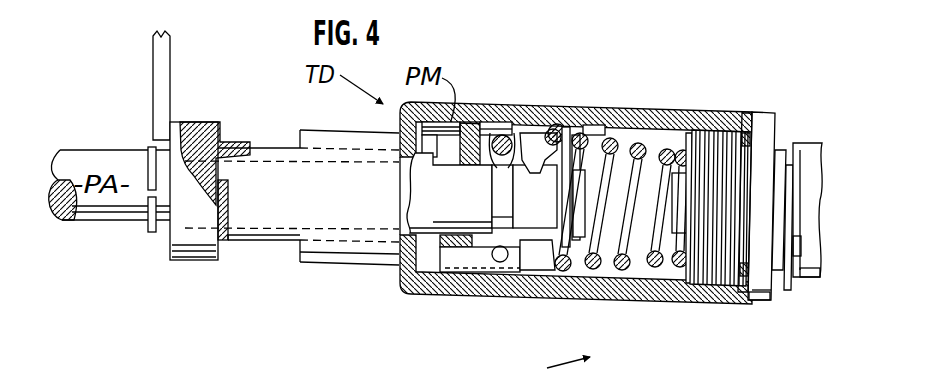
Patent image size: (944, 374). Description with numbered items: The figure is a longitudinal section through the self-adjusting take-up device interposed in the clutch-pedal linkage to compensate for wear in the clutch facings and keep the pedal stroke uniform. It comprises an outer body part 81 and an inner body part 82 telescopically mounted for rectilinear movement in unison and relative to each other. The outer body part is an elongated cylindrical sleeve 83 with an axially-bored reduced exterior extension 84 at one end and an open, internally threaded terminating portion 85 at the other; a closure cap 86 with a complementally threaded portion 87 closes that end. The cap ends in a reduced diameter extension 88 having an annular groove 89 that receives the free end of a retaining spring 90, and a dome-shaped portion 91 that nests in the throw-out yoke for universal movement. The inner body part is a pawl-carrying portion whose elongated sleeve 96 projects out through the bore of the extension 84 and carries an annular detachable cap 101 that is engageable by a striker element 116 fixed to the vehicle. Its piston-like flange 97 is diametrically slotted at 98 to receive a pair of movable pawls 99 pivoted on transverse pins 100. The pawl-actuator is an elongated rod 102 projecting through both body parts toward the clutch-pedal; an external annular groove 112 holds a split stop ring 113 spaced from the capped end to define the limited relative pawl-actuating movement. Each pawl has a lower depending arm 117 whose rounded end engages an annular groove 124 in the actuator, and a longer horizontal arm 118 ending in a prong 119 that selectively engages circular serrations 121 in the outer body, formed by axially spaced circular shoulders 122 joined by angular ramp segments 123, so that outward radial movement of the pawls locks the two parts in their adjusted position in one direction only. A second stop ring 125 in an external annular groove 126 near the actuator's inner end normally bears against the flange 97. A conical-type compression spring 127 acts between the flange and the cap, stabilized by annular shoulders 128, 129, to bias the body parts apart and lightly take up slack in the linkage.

The outer body part 81 is at (701, 108).
The inner body part 82 is at (267, 244).
The elongated cylindrical sleeve 83 is at (747, 137).
The reduced exterior extension 84 is at (345, 264).
The internally threaded terminating portion 85 is at (758, 140).
The closure cap 86 is at (768, 143).
The complementally threaded portion 87 is at (749, 299).
The reduced diameter extension 88 is at (781, 268).
The annular groove 89 is at (789, 178).
The retaining spring 90 is at (789, 245).
The dome-shaped portion 91 is at (817, 278).
The elongated sleeve 96 is at (276, 148).
The piston-like flange 97 is at (432, 148).
The slot 98 is at (560, 126).
The movable pawl 99 is at (448, 225).
The transverse pin 100 is at (442, 297).
The annular detachable cap 101 is at (192, 260).
The elongated rod 102 is at (112, 218).
The external annular groove 112 is at (148, 191).
The split stop ring 113 is at (152, 233).
The striker element 116 is at (168, 67).
The lower depending arm 117 is at (496, 220).
The horizontal arm 118 is at (535, 196).
The prong 119 is at (500, 256).
The circular serrations 121 is at (600, 128).
The circular shoulders 122 is at (607, 127).
The angular ramp segments 123 is at (592, 125).
The annular groove 124 is at (470, 246).
The stop ring 125 is at (562, 266).
The external annular groove 126 is at (625, 293).
The conical-type compression spring 127 is at (725, 268).
The annular shoulder 128 is at (540, 285).
The annular shoulder 129 is at (676, 175).